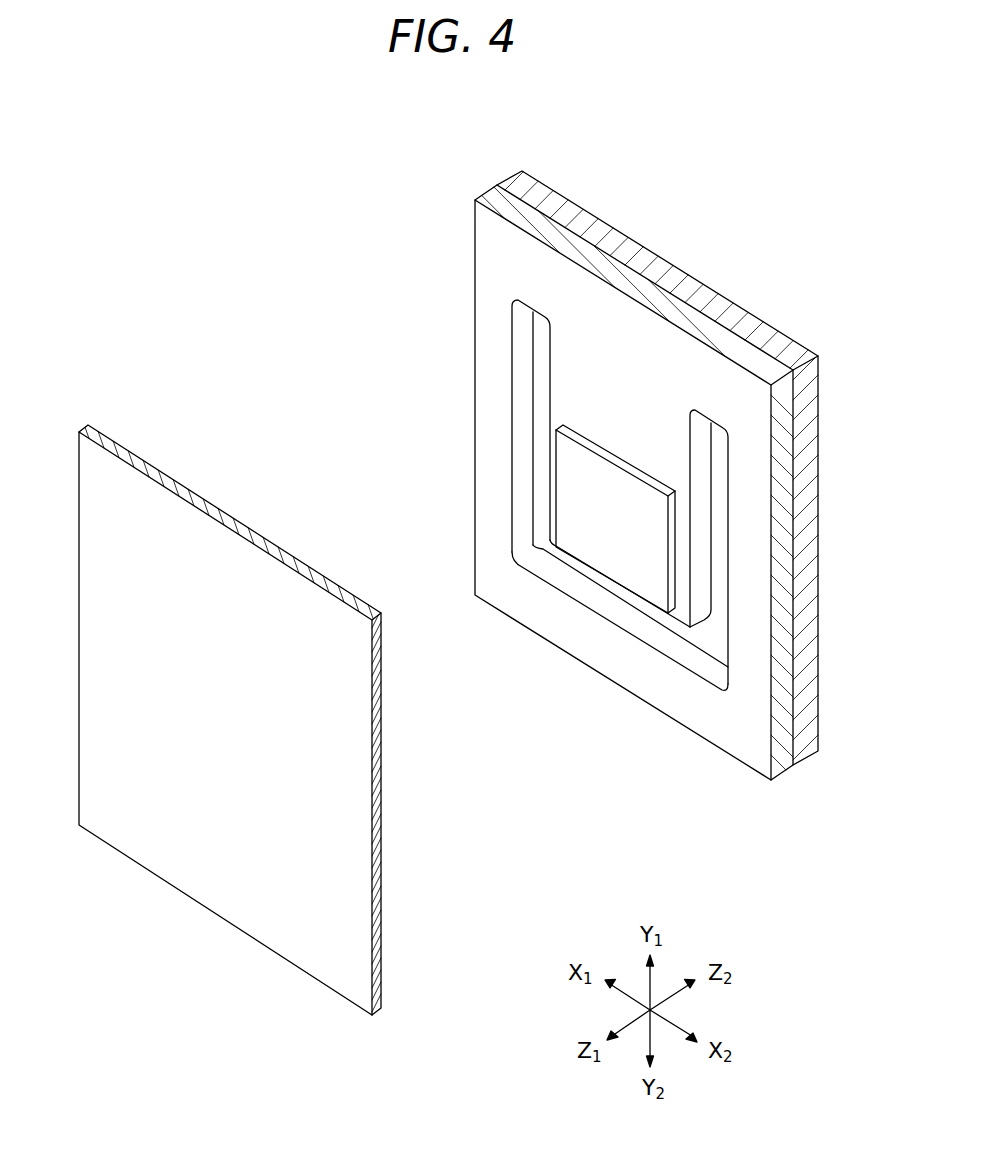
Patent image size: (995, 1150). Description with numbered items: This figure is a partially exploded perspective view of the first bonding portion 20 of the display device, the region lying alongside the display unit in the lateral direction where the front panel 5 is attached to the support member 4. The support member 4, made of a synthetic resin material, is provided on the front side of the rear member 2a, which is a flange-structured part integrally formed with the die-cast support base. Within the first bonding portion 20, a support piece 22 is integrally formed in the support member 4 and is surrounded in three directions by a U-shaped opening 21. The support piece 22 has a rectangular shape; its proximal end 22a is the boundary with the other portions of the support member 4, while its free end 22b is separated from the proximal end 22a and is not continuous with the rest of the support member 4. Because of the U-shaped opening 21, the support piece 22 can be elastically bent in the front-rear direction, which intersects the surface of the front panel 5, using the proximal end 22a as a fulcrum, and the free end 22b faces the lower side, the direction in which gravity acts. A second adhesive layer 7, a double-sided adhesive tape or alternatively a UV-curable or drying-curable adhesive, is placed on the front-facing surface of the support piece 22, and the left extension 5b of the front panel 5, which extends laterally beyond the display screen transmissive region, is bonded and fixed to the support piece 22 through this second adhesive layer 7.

The first bonding portion 20 is at (316, 256).
The support member 4 is at (490, 253).
The rear member 2a is at (713, 300).
The U-shaped opening 21 is at (523, 440).
The support piece 22 is at (682, 612).
The proximal end 22a is at (697, 410).
The free end 22b is at (552, 545).
The second adhesive layer 7 is at (587, 493).
The front panel 5 is at (188, 842).
The left extension 5b is at (230, 720).